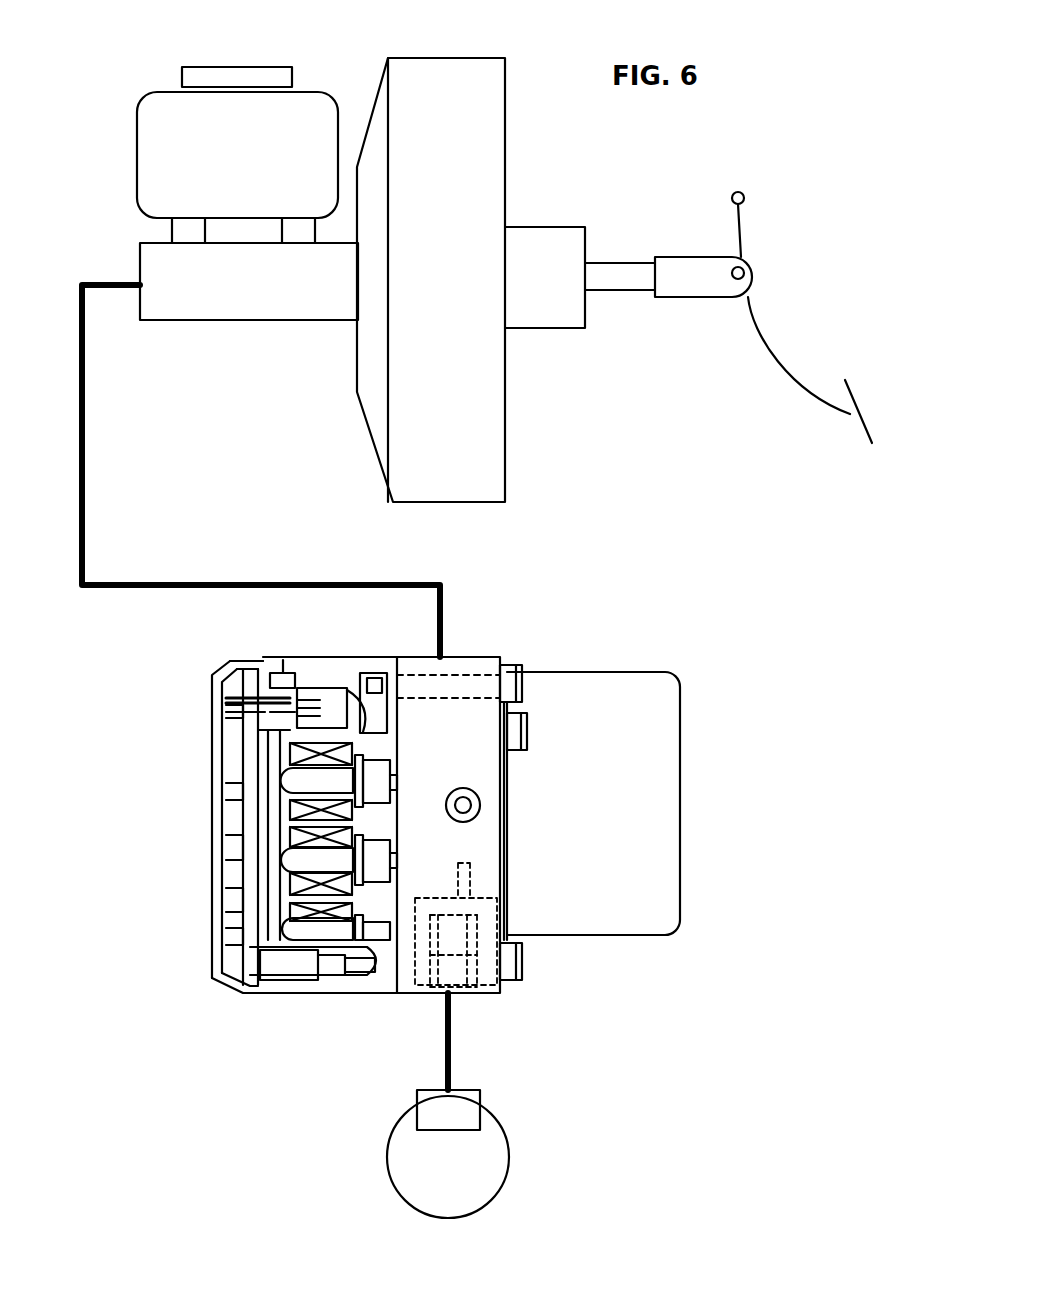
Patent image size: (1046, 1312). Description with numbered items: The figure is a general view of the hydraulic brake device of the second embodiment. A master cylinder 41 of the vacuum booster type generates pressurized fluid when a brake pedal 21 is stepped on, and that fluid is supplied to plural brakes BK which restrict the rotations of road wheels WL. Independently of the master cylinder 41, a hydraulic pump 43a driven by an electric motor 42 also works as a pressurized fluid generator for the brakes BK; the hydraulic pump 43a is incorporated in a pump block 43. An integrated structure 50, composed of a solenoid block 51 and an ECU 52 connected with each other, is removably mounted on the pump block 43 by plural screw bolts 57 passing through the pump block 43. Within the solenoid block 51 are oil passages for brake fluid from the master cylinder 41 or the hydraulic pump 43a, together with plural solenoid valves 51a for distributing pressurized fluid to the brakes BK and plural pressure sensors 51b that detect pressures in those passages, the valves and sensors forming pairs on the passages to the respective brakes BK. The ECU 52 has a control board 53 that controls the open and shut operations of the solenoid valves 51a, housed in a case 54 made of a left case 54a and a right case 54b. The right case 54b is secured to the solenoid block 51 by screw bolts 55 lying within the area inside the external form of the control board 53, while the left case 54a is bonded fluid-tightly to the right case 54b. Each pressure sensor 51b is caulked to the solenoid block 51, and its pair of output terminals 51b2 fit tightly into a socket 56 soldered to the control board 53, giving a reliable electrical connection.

The master cylinder 41 is at (452, 57).
The brake pedal 21 is at (752, 303).
The electric motor 42 is at (663, 797).
The pump block 43 is at (455, 656).
The hydraulic pump 43a is at (481, 804).
The integrated structure 50 is at (386, 1060).
The solenoid block 51 is at (375, 997).
The solenoid valves 51a is at (297, 783).
The pressure sensors 51b is at (293, 690).
The output terminals 51b2 is at (318, 697).
The ECU 52 is at (312, 1000).
The control board 53 is at (232, 815).
The case 54 is at (167, 807).
The left case 54a is at (213, 710).
The right case 54b is at (273, 667).
The screw bolts 55 is at (260, 973).
The socket 56 is at (282, 660).
The screw bolts 57 is at (523, 685).
The brakes BK is at (460, 1103).
The road wheels WL is at (495, 1153).